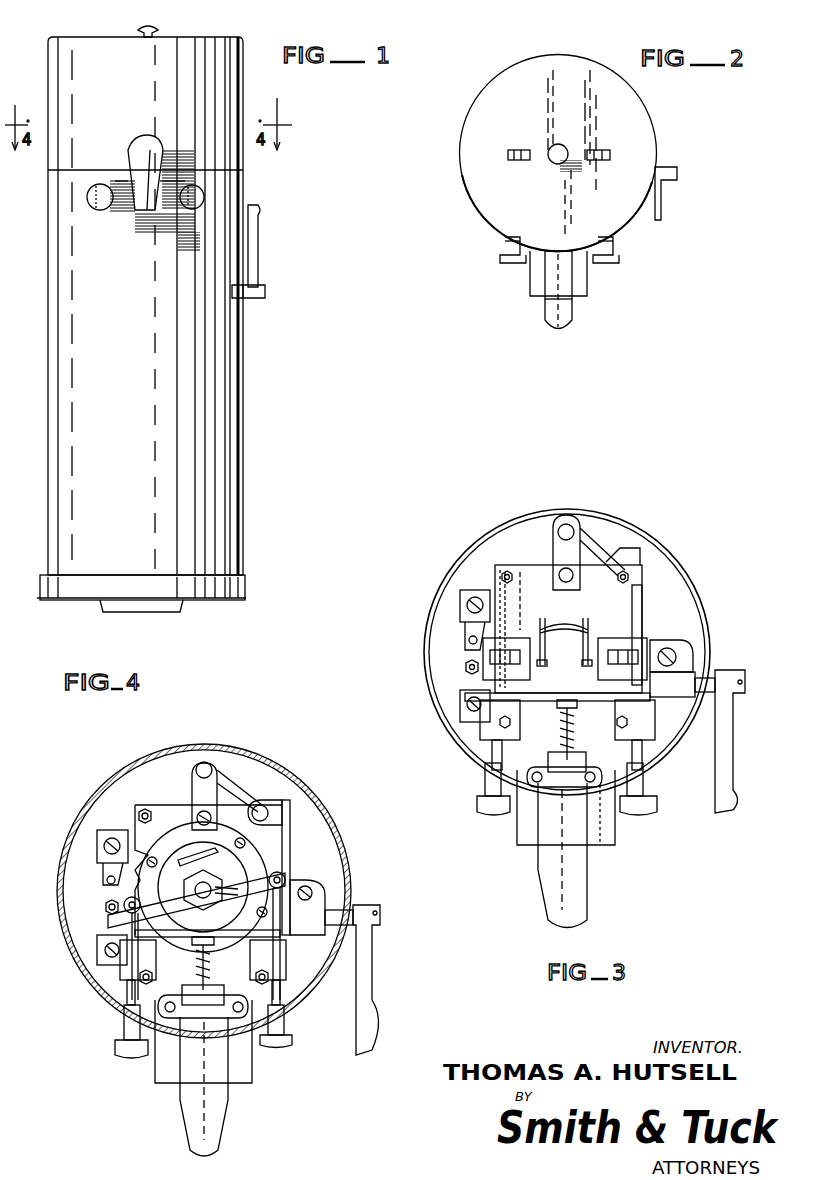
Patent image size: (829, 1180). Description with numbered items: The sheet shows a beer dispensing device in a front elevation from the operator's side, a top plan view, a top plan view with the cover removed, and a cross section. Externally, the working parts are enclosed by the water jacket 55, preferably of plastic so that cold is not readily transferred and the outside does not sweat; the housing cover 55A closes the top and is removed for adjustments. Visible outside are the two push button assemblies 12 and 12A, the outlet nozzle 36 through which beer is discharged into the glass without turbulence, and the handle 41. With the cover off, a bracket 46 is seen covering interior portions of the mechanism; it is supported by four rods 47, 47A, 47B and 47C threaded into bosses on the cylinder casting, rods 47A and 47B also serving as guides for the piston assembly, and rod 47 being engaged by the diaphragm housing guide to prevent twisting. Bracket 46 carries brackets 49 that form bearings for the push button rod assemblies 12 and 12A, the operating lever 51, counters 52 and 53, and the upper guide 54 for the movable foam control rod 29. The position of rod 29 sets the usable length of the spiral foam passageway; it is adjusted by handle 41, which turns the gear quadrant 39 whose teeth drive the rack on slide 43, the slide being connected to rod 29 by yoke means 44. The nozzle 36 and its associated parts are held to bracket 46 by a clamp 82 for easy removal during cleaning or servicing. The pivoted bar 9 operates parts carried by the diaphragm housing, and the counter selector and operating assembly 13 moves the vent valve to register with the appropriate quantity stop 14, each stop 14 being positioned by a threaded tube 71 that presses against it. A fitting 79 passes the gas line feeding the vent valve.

In FIG. 3, the pivoted bar 9 is at (466, 667).
In FIG. 4, the pivoted bar 9 is at (104, 905).
In FIG. 1, the push button assembly 12 is at (97, 200).
In FIG. 2, the push button assembly 12 is at (515, 260).
In FIG. 3, the push button assembly 12 is at (494, 815).
In FIG. 4, the push button assembly 12 is at (125, 1038).
In FIG. 1, the push button assembly 12A is at (195, 194).
In FIG. 2, the push button assembly 12A is at (600, 261).
In FIG. 3, the push button assembly 12A is at (636, 815).
In FIG. 4, the push button assembly 12A is at (282, 1030).
In FIG. 3, the counter selector and operating assembly 13 is at (556, 625).
In FIG. 4, the counter selector and operating assembly 13 is at (198, 848).
In FIG. 3, the quantity stop 14 is at (466, 638).
In FIG. 4, the quantity stop 14 is at (105, 880).
In FIG. 3, the movable rod 29 is at (569, 524).
In FIG. 4, the movable rod 29 is at (207, 762).
In FIG. 1, the nozzle 36 is at (140, 172).
In FIG. 2, the nozzle 36 is at (560, 305).
In FIG. 3, the nozzle 36 is at (575, 862).
In FIG. 4, the nozzle 36 is at (210, 1115).
In FIG. 3, the gear quadrant 39 is at (644, 600).
In FIG. 4, the gear quadrant 39 is at (290, 848).
In FIG. 1, the handle 41 is at (256, 270).
In FIG. 2, the handle 41 is at (662, 195).
In FIG. 3, the handle 41 is at (735, 728).
In FIG. 4, the handle 41 is at (360, 975).
In FIG. 3, the slide 43 is at (633, 560).
In FIG. 4, the slide 43 is at (272, 803).
In FIG. 3, the yoke means 44 is at (595, 555).
In FIG. 4, the yoke means 44 is at (232, 780).
In FIG. 3, the bracket 46 is at (616, 610).
In FIG. 3, the rod 47 is at (500, 575).
In FIG. 4, the rod 47 is at (140, 810).
In FIG. 3, the rod 47A is at (628, 572).
In FIG. 3, the rod 47B is at (640, 748).
In FIG. 4, the rod 47B is at (276, 1000).
In FIG. 3, the rod 47C is at (497, 765).
In FIG. 4, the rod 47C is at (131, 1000).
In FIG. 3, the bracket 49 is at (514, 719).
In FIG. 4, the bracket 49 is at (140, 980).
In FIG. 3, the operating lever 51 is at (612, 835).
In FIG. 4, the operating lever 51 is at (163, 1073).
In FIG. 2, the counter 52 is at (508, 155).
In FIG. 3, the counter 52 is at (483, 660).
In FIG. 2, the counter 53 is at (610, 150).
In FIG. 3, the counter 53 is at (650, 640).
In FIG. 3, the upper guide 54 is at (553, 548).
In FIG. 4, the upper guide 54 is at (195, 785).
In FIG. 1, the water jacket 55 is at (115, 482).
In FIG. 1, the housing cover 55A is at (128, 91).
In FIG. 3, the threaded tube 71 is at (462, 600).
In FIG. 4, the threaded tube 71 is at (100, 842).
In FIG. 3, the fitting 79 is at (470, 697).
In FIG. 4, the fitting 79 is at (128, 918).
In FIG. 3, the clamp 82 is at (552, 790).
In FIG. 4, the clamp 82 is at (228, 998).